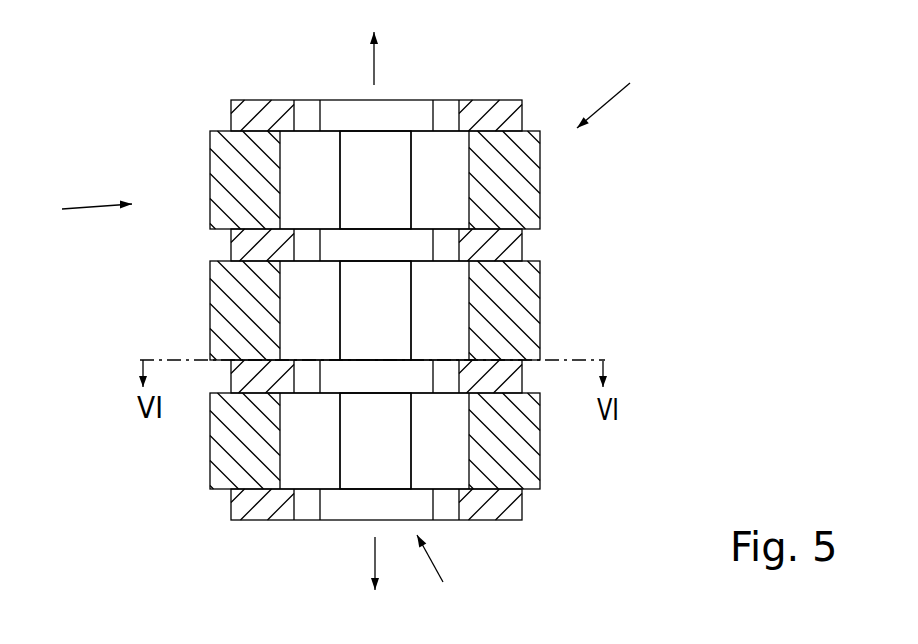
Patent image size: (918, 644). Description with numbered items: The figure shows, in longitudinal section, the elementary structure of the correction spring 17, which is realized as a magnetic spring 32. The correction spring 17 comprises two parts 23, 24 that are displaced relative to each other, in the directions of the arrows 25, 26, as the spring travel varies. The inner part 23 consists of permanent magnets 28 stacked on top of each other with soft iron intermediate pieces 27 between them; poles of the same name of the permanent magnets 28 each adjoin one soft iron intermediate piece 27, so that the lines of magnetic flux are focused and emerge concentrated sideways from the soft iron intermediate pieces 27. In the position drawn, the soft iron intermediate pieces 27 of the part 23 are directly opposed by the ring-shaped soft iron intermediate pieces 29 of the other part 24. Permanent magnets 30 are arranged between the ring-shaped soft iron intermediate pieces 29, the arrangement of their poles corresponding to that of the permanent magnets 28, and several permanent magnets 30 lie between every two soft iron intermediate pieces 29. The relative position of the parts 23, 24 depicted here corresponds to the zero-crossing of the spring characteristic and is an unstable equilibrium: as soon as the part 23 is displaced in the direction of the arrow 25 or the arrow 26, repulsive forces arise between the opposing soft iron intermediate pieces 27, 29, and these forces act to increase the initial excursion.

The correction spring 17 is at (80, 208).
The part of the correction spring 23 is at (441, 577).
The other part of the correction spring 24 is at (280, 518).
The arrow 25 is at (375, 72).
The arrow 26 is at (377, 555).
The soft iron intermediate piece 27 is at (359, 117).
The permanent magnet 28 is at (397, 175).
The ring-shaped soft iron intermediate piece 29 is at (255, 102).
The permanent magnet 30 is at (220, 168).
The magnetic spring 32 is at (622, 94).